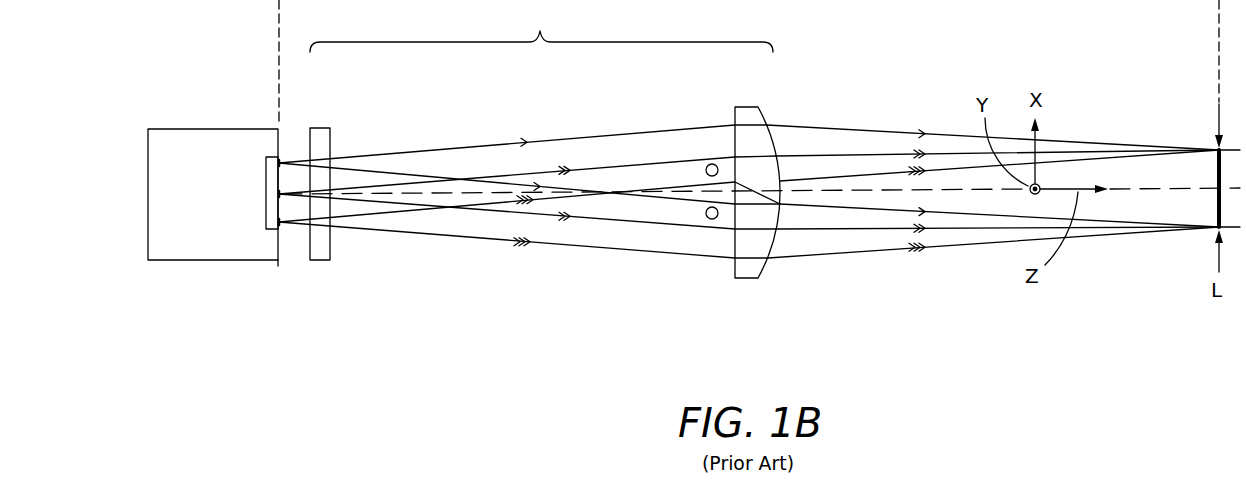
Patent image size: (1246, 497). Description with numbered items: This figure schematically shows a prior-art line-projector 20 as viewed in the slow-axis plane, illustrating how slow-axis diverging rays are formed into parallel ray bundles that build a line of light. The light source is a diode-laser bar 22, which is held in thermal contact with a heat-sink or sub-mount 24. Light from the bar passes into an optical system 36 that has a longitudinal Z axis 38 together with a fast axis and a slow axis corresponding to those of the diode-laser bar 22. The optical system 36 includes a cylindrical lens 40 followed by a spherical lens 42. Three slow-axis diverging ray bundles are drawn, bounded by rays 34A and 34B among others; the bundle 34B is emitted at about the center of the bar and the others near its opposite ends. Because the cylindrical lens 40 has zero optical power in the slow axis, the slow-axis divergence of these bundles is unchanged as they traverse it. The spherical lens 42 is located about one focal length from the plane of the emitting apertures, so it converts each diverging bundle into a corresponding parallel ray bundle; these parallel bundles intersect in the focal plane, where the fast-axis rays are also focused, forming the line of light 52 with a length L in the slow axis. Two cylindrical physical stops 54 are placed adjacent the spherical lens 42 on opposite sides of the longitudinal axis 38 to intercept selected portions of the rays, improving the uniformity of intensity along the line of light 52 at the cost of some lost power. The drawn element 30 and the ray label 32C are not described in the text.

The line-projector 20 is at (858, 346).
The diode-laser bar 22 is at (263, 170).
The heat-sink or sub-mount 24 is at (175, 147).
The emitters 30 is at (293, 232).
The collimating lens 32C is at (383, 215).
The slow-axis diverging ray bundle 34A is at (383, 172).
The slow-axis diverging ray bundle 34B is at (615, 217).
The optical system 36 is at (541, 26).
The longitudinal (Z) axis 38 is at (483, 196).
The cylindrical lens 40 is at (320, 258).
The spherical lens 42 is at (762, 118).
The line of light 52 is at (1210, 164).
The cylindrical physical stops 54 is at (708, 177).